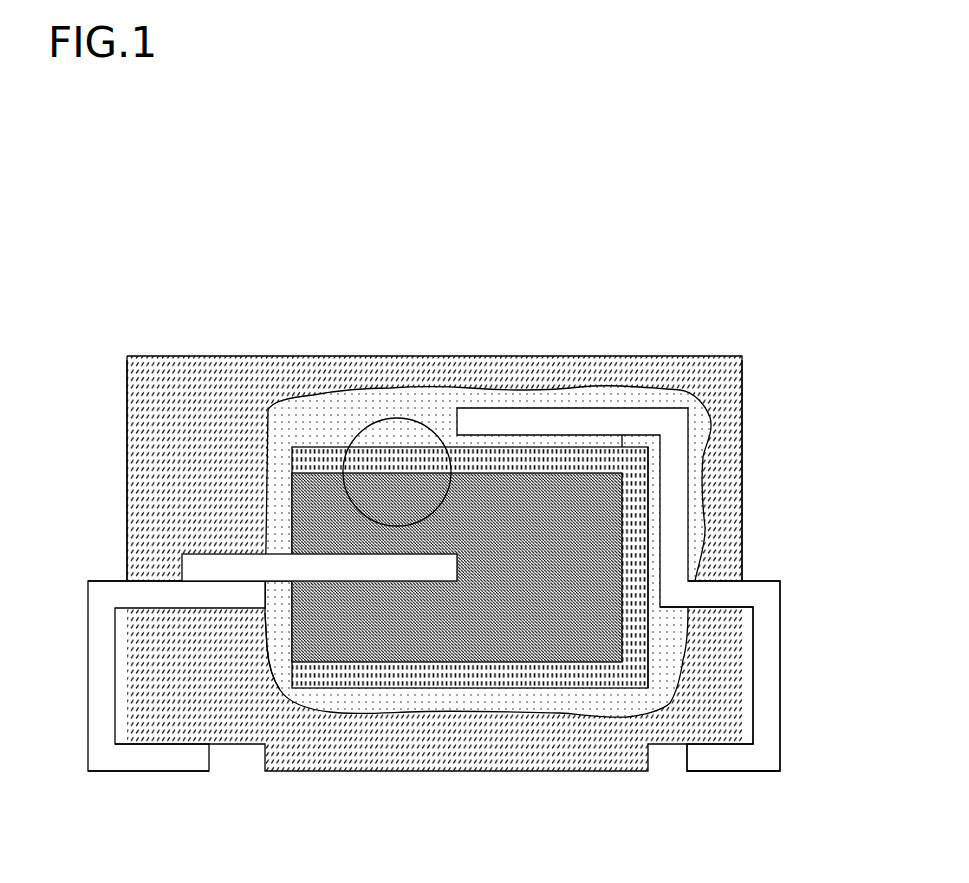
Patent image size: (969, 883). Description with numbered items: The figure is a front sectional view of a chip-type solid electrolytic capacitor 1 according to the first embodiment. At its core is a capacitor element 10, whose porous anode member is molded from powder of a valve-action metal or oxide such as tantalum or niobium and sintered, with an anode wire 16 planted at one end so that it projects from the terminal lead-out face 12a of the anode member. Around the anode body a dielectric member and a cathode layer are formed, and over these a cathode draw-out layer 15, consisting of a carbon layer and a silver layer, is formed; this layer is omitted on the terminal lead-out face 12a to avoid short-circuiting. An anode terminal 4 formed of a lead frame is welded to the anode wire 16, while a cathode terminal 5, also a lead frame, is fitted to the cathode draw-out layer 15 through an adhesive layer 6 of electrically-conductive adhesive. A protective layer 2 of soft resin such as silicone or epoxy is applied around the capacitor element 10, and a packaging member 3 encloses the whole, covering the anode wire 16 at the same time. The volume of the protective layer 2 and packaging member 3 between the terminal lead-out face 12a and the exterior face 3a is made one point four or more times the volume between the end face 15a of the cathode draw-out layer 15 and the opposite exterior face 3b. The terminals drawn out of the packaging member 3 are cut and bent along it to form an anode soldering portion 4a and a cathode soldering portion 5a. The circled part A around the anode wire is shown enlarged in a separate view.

The solid electrolytic capacitor 1 is at (767, 280).
The protective layer 2 is at (357, 417).
The packaging member 3 is at (441, 575).
The exterior face of the packaging member 3a is at (127, 408).
The exterior face of the packaging member 3b is at (743, 432).
The anode terminal 4 is at (110, 757).
The anode soldering portion 4a is at (163, 757).
The cathode terminal 5 is at (768, 700).
The cathode soldering portion 5a is at (711, 755).
The adhesive layer 6 is at (592, 443).
The capacitor element 10 is at (577, 690).
The terminal lead-out face 12a is at (282, 630).
The cathode draw-out layer 15 is at (365, 690).
The end face of the cathode draw-out layer 15a is at (640, 523).
The anode wire 16 is at (207, 567).
The part A is at (425, 420).